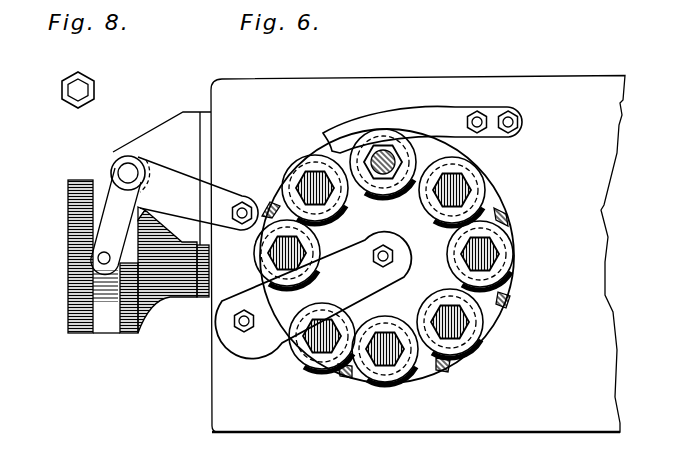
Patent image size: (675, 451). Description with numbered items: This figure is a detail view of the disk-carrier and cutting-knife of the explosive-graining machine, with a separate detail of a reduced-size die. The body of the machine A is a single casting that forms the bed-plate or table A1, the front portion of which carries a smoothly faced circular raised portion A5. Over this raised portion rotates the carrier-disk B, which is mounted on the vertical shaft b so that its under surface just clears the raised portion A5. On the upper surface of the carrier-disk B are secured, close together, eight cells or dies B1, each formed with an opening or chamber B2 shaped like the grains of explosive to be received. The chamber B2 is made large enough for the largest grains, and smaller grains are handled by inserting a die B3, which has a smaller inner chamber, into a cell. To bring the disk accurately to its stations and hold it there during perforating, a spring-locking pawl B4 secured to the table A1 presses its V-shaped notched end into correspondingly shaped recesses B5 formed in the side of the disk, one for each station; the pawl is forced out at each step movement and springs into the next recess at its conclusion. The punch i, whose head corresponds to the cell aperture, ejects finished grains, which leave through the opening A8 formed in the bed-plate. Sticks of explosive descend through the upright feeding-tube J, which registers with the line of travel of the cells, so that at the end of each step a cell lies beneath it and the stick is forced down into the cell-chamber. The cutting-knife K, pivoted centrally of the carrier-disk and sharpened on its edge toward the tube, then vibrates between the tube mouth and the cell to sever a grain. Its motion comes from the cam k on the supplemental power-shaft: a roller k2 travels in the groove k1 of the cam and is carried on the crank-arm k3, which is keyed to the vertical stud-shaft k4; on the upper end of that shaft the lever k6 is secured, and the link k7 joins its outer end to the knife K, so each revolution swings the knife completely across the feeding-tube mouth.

In FIG. 6, the body of the machine A is at (209, 385).
In FIG. 6, the bed-plate or table A1 is at (531, 371).
In FIG. 6, the circular raised portion A5 is at (503, 283).
In FIG. 6, the opening A8 is at (397, 196).
In FIG. 6, the carrier-disk B is at (383, 176).
In FIG. 6, the cells or dies B1 is at (308, 168).
In FIG. 6, the opening or chamber B2 is at (304, 185).
In FIG. 8, the die B3 is at (62, 93).
In FIG. 6, the spring-locking pawl B4 is at (333, 131).
In FIG. 6, the recesses B5 is at (500, 212).
In FIG. 6, the vertical shaft b is at (396, 257).
In FIG. 6, the punch i is at (383, 147).
In FIG. 6, the feeding-tube J is at (315, 243).
In FIG. 6, the cutting-knife K is at (262, 350).
In FIG. 8, the cam k is at (72, 272).
In FIG. 8, the groove k1 is at (109, 315).
In FIG. 8, the roller k2 is at (95, 257).
In FIG. 8, the crank-arm k3 is at (100, 223).
In FIG. 8, the vertical stud-shaft k4 is at (122, 170).
In FIG. 8, the lever k6 is at (181, 172).
In FIG. 8, the link k7 is at (222, 297).